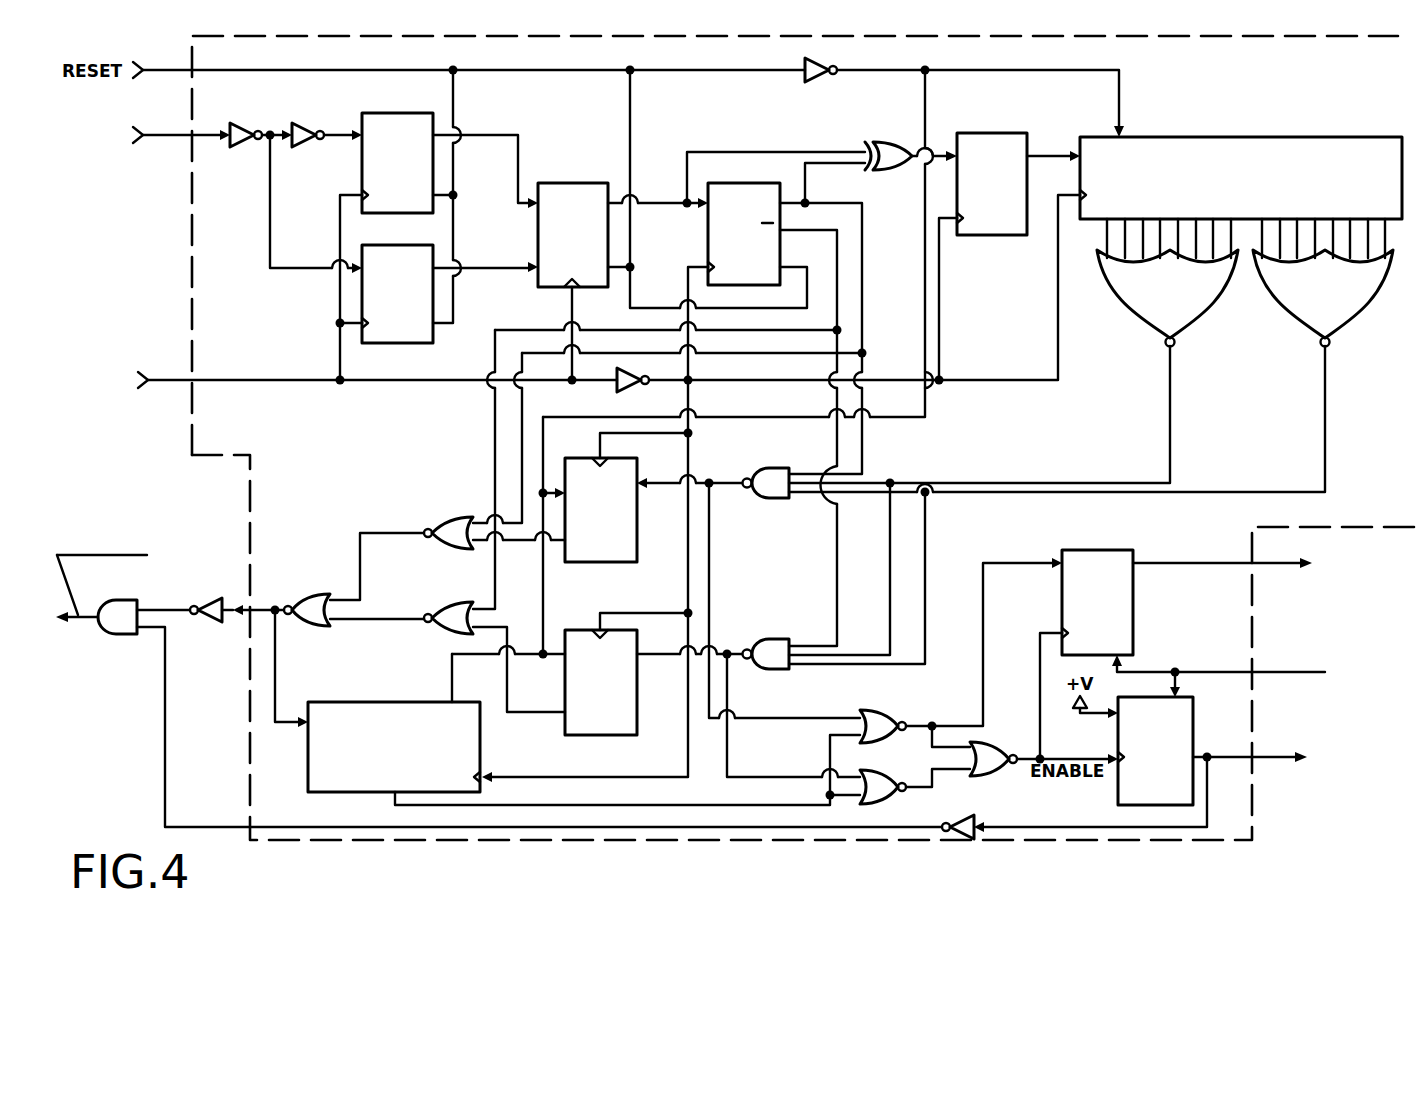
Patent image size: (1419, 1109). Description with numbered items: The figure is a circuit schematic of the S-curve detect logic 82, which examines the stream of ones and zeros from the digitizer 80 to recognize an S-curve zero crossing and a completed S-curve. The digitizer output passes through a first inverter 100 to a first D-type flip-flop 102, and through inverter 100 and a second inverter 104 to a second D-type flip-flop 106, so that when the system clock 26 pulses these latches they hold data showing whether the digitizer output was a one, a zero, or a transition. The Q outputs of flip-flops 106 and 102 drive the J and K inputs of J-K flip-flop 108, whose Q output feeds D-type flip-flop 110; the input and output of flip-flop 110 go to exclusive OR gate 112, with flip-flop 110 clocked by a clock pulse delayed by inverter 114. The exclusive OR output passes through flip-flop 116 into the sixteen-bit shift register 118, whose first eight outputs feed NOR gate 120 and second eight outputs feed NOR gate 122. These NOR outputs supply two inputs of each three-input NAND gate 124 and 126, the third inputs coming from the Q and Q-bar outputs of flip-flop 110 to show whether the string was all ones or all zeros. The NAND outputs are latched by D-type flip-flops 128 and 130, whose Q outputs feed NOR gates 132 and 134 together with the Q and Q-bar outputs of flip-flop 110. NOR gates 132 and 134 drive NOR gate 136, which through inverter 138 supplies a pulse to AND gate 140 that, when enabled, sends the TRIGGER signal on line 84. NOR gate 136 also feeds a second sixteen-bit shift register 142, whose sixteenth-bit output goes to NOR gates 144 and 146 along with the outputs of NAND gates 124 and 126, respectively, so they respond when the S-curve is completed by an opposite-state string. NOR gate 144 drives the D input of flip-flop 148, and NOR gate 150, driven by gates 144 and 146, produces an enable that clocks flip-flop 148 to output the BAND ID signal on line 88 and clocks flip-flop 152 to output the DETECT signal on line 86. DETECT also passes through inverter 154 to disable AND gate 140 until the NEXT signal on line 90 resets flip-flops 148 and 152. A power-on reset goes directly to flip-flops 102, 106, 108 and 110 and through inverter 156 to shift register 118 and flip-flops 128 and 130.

The system clock 26 is at (88, 400).
The digitizer 80 is at (159, 136).
The S-curve detect logic 82 is at (312, 840).
The TRIGGER signal line 84 is at (74, 632).
The DETECT signal line 86 is at (1275, 778).
The BAND ID signal line 88 is at (1278, 583).
The NEXT signal line 90 is at (1300, 683).
The first inverter 100 is at (250, 100).
The first D-type flip-flop 102 is at (433, 343).
The second inverter 104 is at (322, 98).
The second D-type flip-flop 106 is at (420, 100).
The J-K-type flip-flop 108 is at (585, 183).
The D-type flip-flop 110 is at (745, 183).
The exclusive OR gate 112 is at (887, 142).
The inverter 114 is at (614, 386).
The flip-flop 116 is at (1030, 110).
The 16-bit shift register 118 is at (1250, 137).
The NOR gate 120 is at (1198, 330).
The NOR gate 122 is at (1320, 340).
The NAND gate 124 is at (790, 452).
The NAND gate 126 is at (776, 639).
The D-type flip-flop 128 is at (600, 562).
The D-type flip-flop 130 is at (598, 735).
The NOR gate 132 is at (437, 517).
The NOR gate 134 is at (440, 602).
The NOR gate 136 is at (322, 594).
The inverter 138 is at (206, 598).
The AND gate 140 is at (128, 592).
The second 16-bit shift register 142 is at (345, 702).
The NOR gate 144 is at (888, 695).
The NOR gate 146 is at (880, 804).
The D-type flip-flop 148 is at (1118, 537).
The NOR gate 150 is at (1000, 776).
The D-type flip-flop 152 is at (1140, 805).
The inverter 154 is at (966, 840).
The inverter 156 is at (830, 66).